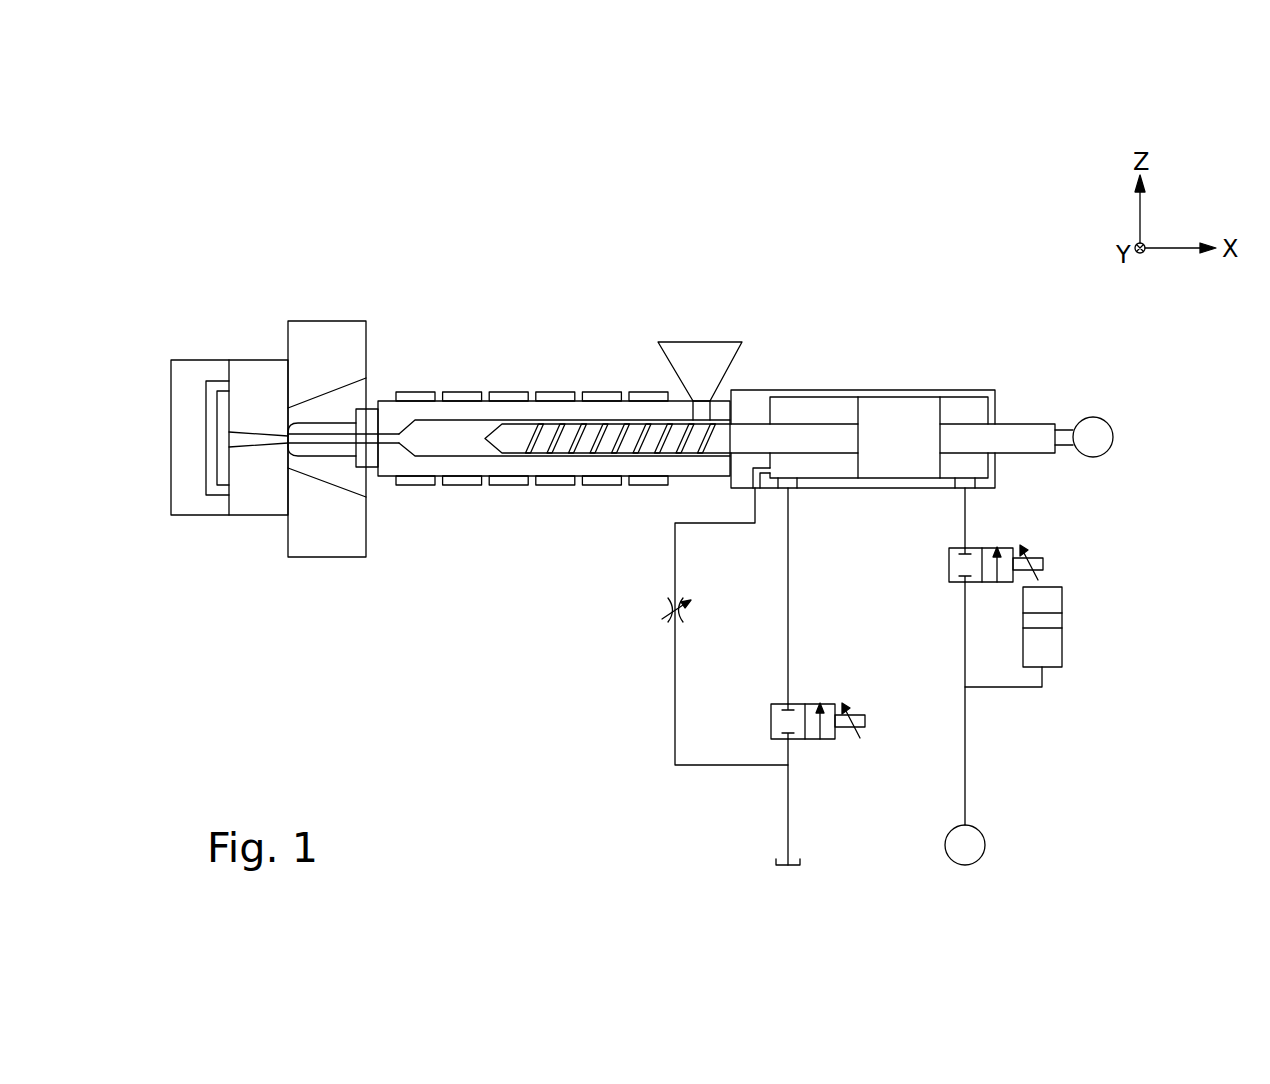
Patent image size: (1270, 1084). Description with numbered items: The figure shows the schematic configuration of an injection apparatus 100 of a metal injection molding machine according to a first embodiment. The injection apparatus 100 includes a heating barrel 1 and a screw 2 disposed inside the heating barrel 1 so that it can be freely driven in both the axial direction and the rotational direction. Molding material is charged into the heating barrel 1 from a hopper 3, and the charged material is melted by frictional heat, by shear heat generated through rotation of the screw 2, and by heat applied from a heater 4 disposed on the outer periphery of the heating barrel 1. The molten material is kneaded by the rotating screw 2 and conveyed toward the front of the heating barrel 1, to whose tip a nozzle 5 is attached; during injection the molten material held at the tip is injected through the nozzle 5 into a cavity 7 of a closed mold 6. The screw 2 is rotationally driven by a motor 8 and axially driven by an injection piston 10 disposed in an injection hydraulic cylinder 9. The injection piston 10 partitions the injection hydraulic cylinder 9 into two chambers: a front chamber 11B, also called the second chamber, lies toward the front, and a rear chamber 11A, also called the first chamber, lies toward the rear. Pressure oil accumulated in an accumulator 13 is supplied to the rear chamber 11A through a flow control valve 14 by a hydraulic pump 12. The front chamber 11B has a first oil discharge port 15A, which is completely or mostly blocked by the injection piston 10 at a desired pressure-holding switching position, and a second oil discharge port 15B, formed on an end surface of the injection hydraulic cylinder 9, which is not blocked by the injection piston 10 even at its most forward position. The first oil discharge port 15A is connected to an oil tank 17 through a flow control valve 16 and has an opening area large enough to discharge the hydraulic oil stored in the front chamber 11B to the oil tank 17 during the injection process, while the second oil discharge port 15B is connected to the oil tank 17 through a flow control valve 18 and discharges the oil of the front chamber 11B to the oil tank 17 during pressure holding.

The injection apparatus 100 is at (676, 215).
The heating barrel 1 is at (425, 471).
The screw 2 is at (560, 460).
The hopper 3 is at (703, 345).
The heater 4 is at (465, 392).
The nozzle 5 is at (333, 418).
The mold 6 is at (185, 362).
The cavity 7 is at (218, 492).
The motor 8 is at (1088, 417).
The injection hydraulic cylinder 9 is at (977, 395).
The injection piston 10 is at (893, 410).
The rear chamber 11A is at (973, 470).
The front chamber 11B is at (850, 480).
The hydraulic pump 12 is at (985, 840).
The accumulator 13 is at (1062, 637).
The flow control valve 14 is at (1043, 563).
The first oil discharge port 15A is at (793, 488).
The second oil discharge port 15B is at (757, 488).
The flow control valve 16 is at (777, 700).
The oil tank 17 is at (776, 862).
The flow control valve 18 is at (660, 608).